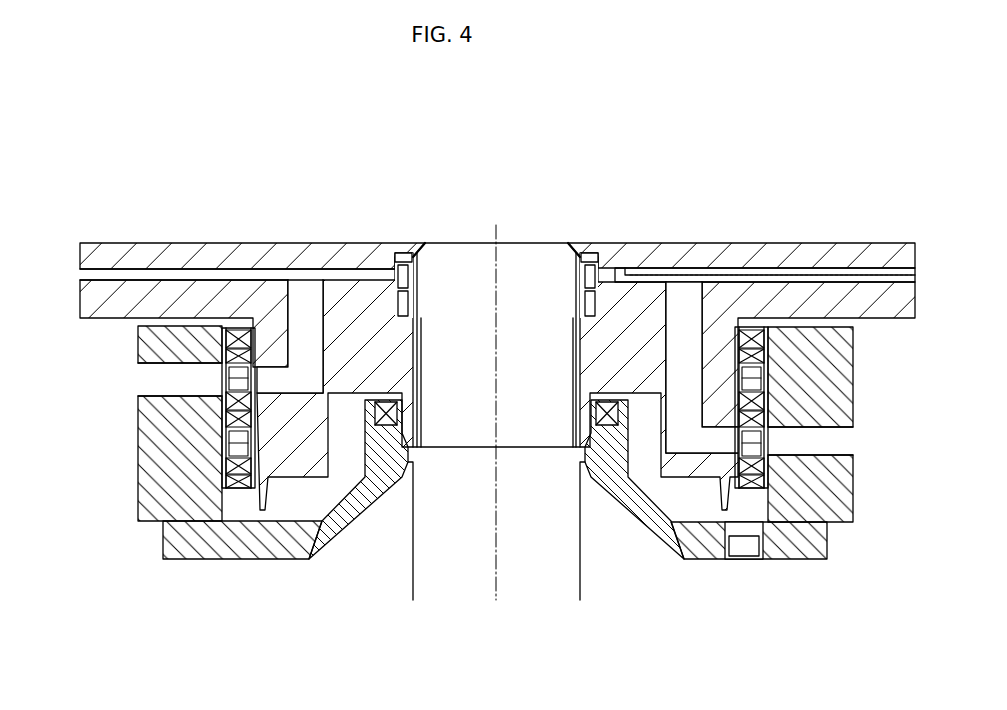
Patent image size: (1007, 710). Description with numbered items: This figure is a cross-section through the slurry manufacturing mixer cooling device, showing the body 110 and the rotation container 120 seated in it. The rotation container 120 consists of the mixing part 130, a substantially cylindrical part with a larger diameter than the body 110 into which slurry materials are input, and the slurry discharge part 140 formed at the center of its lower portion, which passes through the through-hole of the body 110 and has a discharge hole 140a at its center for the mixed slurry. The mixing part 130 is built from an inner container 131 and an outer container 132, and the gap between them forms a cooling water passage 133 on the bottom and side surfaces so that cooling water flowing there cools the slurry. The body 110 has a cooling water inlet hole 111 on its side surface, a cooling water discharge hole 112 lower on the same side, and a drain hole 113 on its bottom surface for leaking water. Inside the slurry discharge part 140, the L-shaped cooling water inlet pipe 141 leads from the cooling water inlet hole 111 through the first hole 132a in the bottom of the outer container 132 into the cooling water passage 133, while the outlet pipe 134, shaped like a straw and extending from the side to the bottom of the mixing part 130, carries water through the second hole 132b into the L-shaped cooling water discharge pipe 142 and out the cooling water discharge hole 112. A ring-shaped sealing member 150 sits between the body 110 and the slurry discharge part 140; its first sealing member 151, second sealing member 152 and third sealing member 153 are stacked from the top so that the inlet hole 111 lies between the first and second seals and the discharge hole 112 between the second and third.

The body 110 is at (145, 475).
The cooling water inlet hole 111 is at (145, 370).
The cooling water discharge hole 112 is at (862, 441).
The drain hole 113 is at (752, 548).
The rotation container 120 is at (93, 142).
The mixing part 130 is at (172, 194).
The inner container 131 is at (158, 257).
The outer container 132 is at (100, 296).
The first hole 132a is at (303, 298).
The second hole 132b is at (687, 297).
The cooling water passage 133 is at (103, 277).
The outlet pipe 134 is at (802, 275).
The slurry discharge part 140 is at (378, 343).
The discharge hole 140a is at (540, 262).
The cooling water inlet pipe 141 is at (305, 377).
The cooling water discharge pipe 142 is at (680, 378).
The sealing member 150 is at (305, 625).
The first sealing member 151 is at (222, 340).
The second sealing member 152 is at (258, 418).
The third sealing member 153 is at (238, 490).